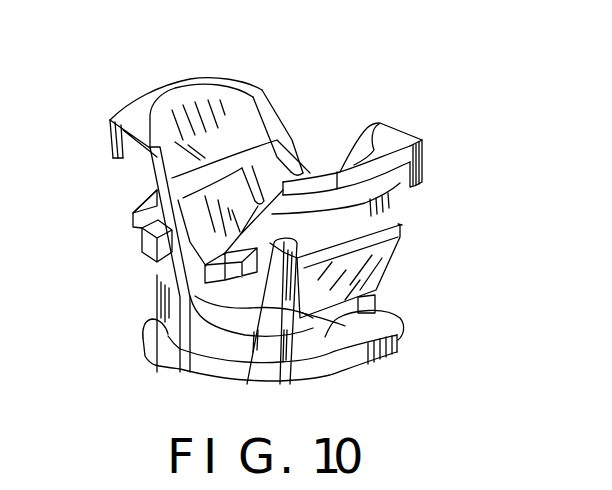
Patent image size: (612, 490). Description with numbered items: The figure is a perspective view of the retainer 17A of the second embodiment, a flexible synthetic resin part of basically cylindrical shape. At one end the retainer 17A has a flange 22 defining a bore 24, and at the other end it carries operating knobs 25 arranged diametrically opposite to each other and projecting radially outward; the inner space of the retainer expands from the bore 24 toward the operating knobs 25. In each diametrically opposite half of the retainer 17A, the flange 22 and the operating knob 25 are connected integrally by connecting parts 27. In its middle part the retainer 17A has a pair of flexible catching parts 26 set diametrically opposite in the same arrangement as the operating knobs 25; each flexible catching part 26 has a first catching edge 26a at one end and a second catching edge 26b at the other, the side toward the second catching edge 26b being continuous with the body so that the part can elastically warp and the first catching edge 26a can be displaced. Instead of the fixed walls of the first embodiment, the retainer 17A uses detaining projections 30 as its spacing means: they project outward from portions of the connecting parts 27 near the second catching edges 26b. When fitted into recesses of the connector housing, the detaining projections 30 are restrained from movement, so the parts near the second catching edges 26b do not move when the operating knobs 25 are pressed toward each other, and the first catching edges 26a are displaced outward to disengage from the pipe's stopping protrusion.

The retainer 17A is at (329, 90).
The operating knob 25 is at (157, 98).
The flexible catching part 26 is at (133, 222).
The first catching edge 26a is at (400, 333).
The second catching edge 26b is at (135, 203).
The connecting part 27 is at (153, 285).
The detaining projection 30 is at (143, 248).
The flange 22 is at (148, 330).
The bore 24 is at (330, 337).